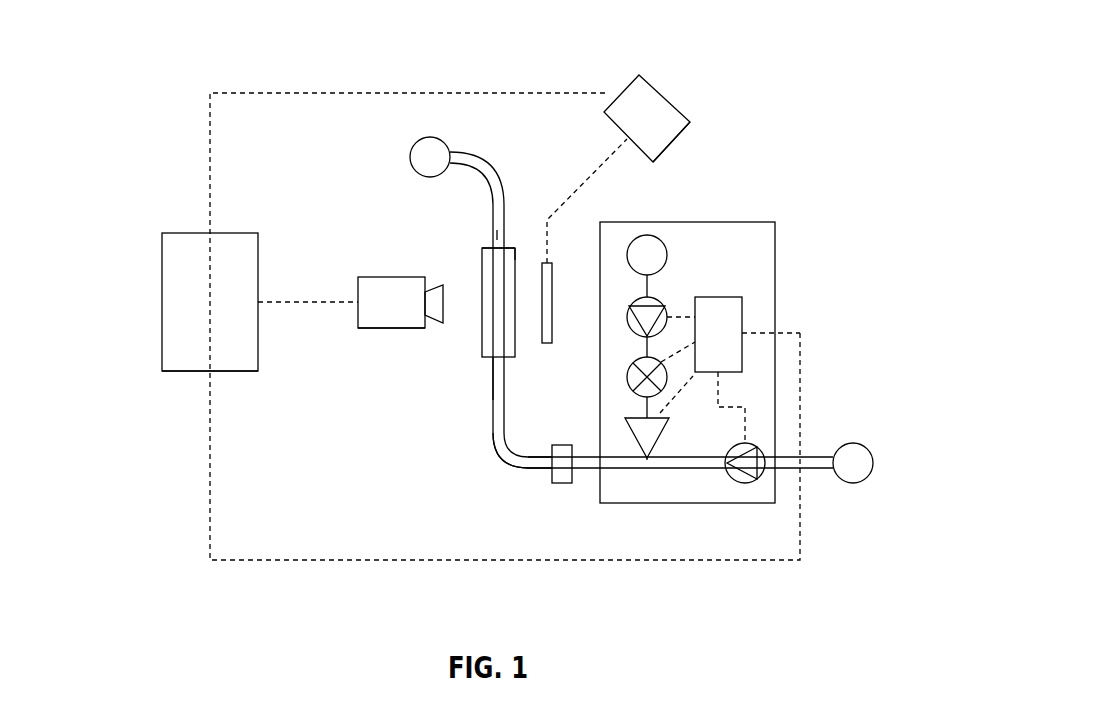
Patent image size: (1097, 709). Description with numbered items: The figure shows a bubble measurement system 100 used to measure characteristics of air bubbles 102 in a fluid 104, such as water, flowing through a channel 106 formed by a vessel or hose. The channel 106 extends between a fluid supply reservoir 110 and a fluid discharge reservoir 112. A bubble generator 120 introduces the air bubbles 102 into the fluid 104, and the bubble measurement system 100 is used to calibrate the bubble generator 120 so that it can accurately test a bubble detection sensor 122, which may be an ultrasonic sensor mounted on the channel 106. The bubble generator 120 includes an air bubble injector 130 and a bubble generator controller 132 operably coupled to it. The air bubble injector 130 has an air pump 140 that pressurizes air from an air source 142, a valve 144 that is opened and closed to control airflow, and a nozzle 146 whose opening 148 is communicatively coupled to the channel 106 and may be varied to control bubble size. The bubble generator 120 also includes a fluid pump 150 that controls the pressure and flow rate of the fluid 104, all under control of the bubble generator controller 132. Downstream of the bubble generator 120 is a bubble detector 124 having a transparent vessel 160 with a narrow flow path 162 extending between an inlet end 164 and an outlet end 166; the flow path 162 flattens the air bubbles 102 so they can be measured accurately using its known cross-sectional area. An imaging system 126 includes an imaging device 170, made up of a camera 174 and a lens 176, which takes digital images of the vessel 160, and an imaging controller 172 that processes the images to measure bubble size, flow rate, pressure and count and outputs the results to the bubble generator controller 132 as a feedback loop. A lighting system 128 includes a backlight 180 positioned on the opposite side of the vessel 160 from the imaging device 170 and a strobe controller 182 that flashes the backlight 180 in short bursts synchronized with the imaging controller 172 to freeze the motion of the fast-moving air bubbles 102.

The bubble measurement system 100 is at (337, 48).
The air bubbles 102 is at (494, 408).
The fluid 104 is at (523, 465).
The channel 106 is at (497, 458).
The fluid supply reservoir 110 is at (873, 465).
The fluid discharge reservoir 112 is at (410, 157).
The bubble generator 120 is at (765, 218).
The bubble detection sensor 122 is at (561, 492).
The bubble detector 124 is at (477, 340).
The imaging system 126 is at (138, 303).
The lighting system 128 is at (678, 80).
The air bubble injector 130 is at (679, 252).
The bubble generator controller 132 is at (748, 308).
The air pump 140 is at (662, 304).
The air source 142 is at (647, 235).
The valve 144 is at (667, 385).
The nozzle 146 is at (657, 440).
The opening 148 is at (645, 467).
The fluid pump 150 is at (748, 485).
The vessel 160 is at (510, 248).
The flow path 162 is at (497, 240).
The inlet end 164 is at (491, 360).
The outlet end 166 is at (486, 247).
The imaging device 170 is at (374, 333).
The imaging controller 172 is at (184, 371).
The camera 174 is at (375, 276).
The lens 176 is at (438, 282).
The backlight 180 is at (552, 320).
The strobe controller 182 is at (684, 114).